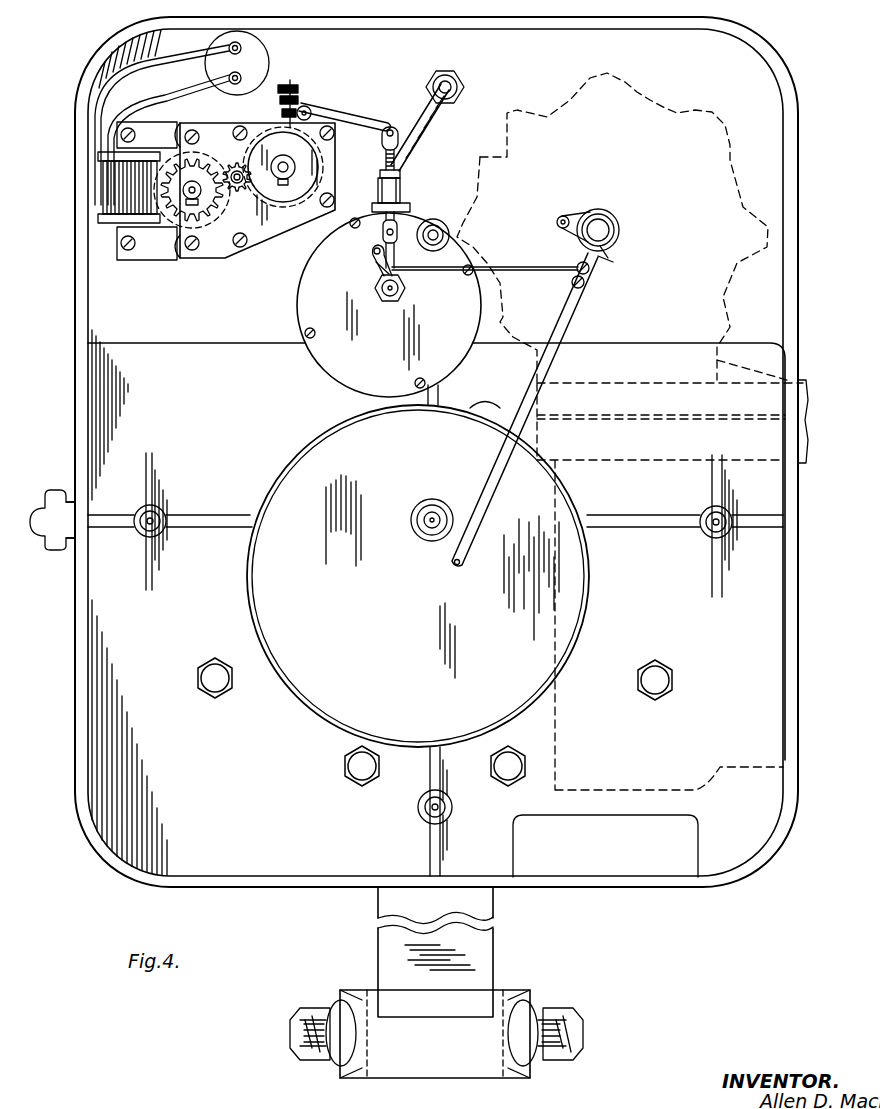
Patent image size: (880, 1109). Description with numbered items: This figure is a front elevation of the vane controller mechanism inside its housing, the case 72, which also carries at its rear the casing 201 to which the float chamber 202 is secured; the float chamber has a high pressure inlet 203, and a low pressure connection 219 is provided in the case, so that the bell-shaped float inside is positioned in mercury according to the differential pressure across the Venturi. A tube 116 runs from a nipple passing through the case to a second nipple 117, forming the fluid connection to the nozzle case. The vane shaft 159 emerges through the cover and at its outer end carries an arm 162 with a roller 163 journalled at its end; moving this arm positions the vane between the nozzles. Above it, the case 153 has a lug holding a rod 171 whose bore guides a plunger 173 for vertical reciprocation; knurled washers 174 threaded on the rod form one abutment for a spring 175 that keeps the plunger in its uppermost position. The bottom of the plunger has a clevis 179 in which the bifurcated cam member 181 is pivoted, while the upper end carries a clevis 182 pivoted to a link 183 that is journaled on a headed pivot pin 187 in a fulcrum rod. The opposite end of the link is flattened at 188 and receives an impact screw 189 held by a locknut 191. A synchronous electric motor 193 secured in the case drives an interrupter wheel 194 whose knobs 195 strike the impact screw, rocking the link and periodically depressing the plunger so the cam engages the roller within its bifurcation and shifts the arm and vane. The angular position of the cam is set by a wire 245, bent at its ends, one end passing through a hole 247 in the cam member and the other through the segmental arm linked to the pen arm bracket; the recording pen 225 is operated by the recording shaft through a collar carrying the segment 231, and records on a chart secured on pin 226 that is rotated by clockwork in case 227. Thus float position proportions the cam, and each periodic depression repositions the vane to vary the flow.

The case 72 is at (96, 846).
The tube 116 is at (428, 122).
The nipple 117 is at (401, 199).
The case 153 is at (300, 290).
The vane shaft 159 is at (408, 288).
The arm 162 is at (383, 280).
The roller 163 is at (370, 258).
The rod 171 is at (385, 198).
The plunger 173 is at (387, 170).
The knurled washers 174 is at (399, 165).
The spring 175 is at (401, 176).
The clevis 179 is at (398, 216).
The bifurcated cam member 181 is at (318, 252).
The clevis 182 is at (443, 68).
The link 183 is at (365, 108).
The headed pivot pin 187 is at (297, 113).
The flattened end 188 is at (298, 98).
The impact screw 189 is at (290, 84).
The locknut 191 is at (296, 111).
The synchronous electric motor 193 is at (172, 243).
The interrupter wheel 194 is at (290, 192).
The knobs 195 is at (387, 157).
The casing 201 is at (678, 113).
The float chamber 202 is at (558, 732).
The high pressure inlet 203 is at (556, 782).
The low pressure connection 219 is at (505, 110).
The recording pen 225 is at (486, 500).
The pin 226 is at (433, 510).
The case 227 is at (251, 572).
The segment 231 is at (599, 209).
The wire 245 is at (530, 266).
The hole 247 is at (388, 270).